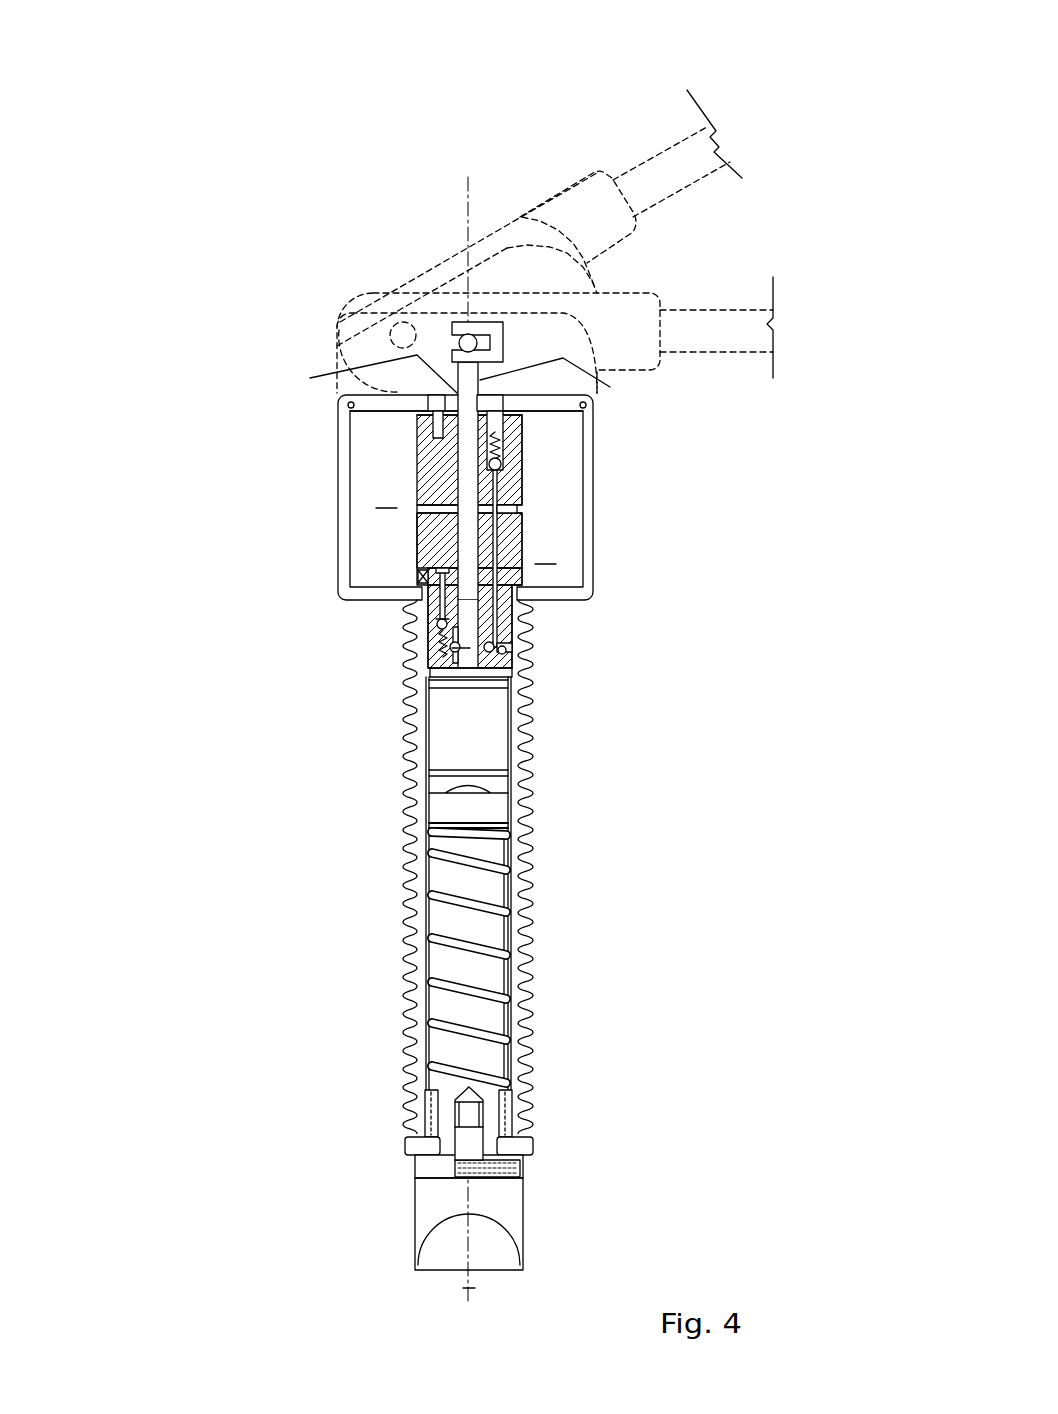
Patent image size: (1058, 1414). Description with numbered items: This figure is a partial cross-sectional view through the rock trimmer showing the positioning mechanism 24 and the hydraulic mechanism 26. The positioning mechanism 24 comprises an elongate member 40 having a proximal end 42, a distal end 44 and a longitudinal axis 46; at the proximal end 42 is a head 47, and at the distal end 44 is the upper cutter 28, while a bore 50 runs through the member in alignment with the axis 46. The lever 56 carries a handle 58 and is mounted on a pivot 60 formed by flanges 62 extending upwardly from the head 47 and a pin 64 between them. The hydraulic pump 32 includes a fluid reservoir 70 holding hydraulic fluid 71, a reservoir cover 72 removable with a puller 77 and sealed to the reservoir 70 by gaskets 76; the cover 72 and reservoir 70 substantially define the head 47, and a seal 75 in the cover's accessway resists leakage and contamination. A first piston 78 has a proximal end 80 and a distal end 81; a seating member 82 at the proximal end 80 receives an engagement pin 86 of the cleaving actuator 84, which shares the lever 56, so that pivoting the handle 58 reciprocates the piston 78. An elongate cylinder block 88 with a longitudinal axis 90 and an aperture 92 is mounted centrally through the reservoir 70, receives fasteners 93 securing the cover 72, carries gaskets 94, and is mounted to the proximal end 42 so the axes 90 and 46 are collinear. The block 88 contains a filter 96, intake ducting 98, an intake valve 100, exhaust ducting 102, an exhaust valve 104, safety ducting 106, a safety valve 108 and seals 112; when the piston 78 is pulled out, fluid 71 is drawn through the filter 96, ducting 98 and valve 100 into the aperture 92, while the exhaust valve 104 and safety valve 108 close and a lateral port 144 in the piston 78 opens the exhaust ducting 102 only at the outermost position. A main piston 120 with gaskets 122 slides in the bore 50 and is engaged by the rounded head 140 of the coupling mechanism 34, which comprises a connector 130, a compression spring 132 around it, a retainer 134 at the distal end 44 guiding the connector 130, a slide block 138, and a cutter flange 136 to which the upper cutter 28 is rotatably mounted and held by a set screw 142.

The positioning mechanism 24 is at (236, 686).
The hydraulic mechanism 26 is at (236, 761).
The upper cutter 28 is at (348, 1216).
The hydraulic pump 32 is at (694, 519).
The coupling mechanism 34 is at (594, 958).
The elongate member 40 is at (637, 867).
The proximal end 42 is at (602, 572).
The distal end 44 is at (295, 867).
The longitudinal axis 46 is at (606, 1200).
The head 47 is at (193, 460).
The bore 50 is at (339, 827).
The lever 56 is at (467, 176).
The handle 58 is at (683, 199).
The pivot 60 is at (420, 281).
The flanges 62 is at (386, 325).
The pin 64 is at (313, 230).
The fluid reservoir 70 is at (587, 556).
The hydraulic fluid 71 is at (466, 523).
The reservoir cover 72 is at (553, 442).
The seal 75 is at (315, 365).
The gaskets 76 is at (465, 415).
The puller 77 is at (613, 384).
The first piston 78 is at (309, 604).
The proximal end 80 is at (587, 241).
The distal end 81 is at (340, 684).
The seating member 82 is at (470, 206).
The cleaving actuator 84 is at (346, 360).
The engagement pin 86 is at (409, 259).
The cylinder block 88 is at (315, 500).
The longitudinal axis 90 is at (368, 655).
The aperture 92 is at (461, 635).
The fasteners 93 is at (309, 456).
The gaskets 94 is at (338, 431).
The filter 96 is at (311, 629).
The intake ducting 98 is at (310, 656).
The intake valve 100 is at (336, 718).
The exhaust ducting 102 is at (465, 588).
The exhaust valve 104 is at (600, 697).
The safety ducting 106 is at (605, 544).
The safety valve 108 is at (630, 515).
The seals 112 is at (465, 612).
The main piston 120 is at (335, 907).
The gaskets 122 is at (334, 836).
The connector 130 is at (311, 959).
The compression spring 132 is at (634, 960).
The retainer 134 is at (465, 1104).
The cutter flange 136 is at (341, 1143).
The slide block 138 is at (600, 835).
The head 140 is at (600, 793).
The set screw 142 is at (613, 1148).
The port 144 is at (294, 572).